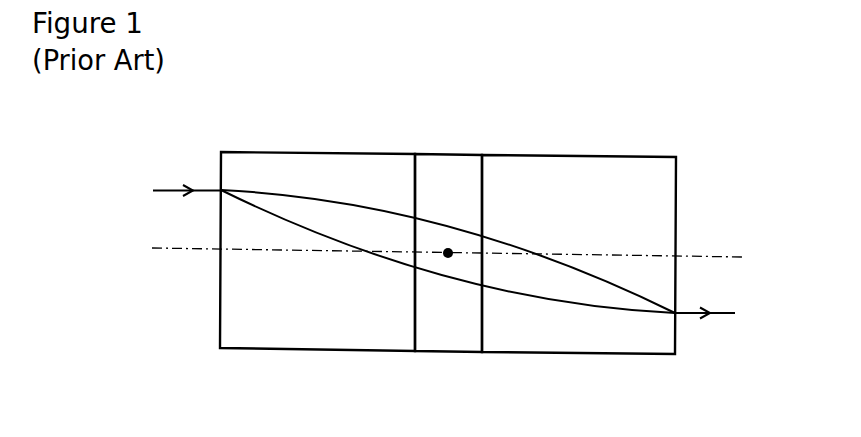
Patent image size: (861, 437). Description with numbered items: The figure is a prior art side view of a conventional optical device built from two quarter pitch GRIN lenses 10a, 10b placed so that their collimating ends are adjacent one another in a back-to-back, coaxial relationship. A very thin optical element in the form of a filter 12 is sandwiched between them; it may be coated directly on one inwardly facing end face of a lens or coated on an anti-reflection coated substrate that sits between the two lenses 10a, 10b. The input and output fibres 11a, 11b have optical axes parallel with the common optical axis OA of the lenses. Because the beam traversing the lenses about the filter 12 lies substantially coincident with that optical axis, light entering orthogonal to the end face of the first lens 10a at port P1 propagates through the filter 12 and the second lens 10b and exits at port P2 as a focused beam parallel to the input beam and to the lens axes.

The quarter pitch GRIN lens 10a is at (282, 152).
The quarter pitch GRIN lens 10b is at (600, 155).
The filter 12 is at (440, 153).
The input fibre 11a is at (166, 184).
The output fibre 11b is at (727, 311).
The optical axis OA is at (172, 249).
The port P1 is at (221, 190).
The port P2 is at (675, 313).